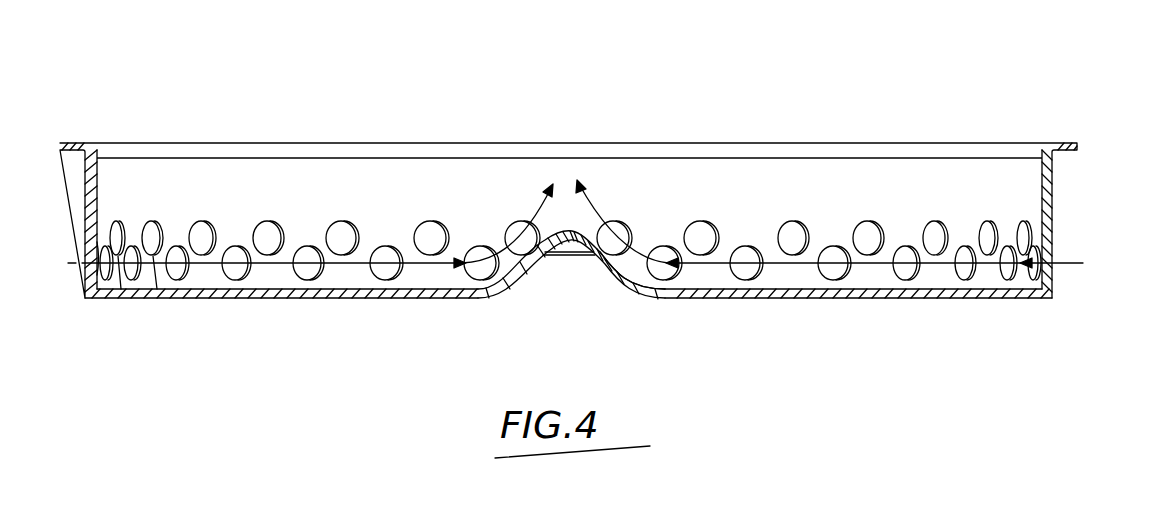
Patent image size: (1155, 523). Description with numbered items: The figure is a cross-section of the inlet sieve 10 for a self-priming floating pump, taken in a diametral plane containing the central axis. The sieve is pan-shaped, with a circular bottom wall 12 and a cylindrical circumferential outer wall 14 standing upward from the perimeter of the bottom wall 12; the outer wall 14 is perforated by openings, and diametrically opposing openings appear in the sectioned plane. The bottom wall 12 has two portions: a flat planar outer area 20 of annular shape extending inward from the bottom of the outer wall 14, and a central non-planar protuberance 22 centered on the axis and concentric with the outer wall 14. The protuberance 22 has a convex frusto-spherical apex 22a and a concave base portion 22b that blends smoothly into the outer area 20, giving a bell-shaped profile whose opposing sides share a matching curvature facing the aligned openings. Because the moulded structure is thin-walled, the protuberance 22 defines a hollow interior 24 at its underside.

The inlet sieve 10 is at (998, 85).
The bottom wall 12 is at (833, 311).
The circumferential outer wall 14 is at (1052, 187).
The flat planar outer area 20 is at (882, 293).
The protuberance 22 is at (531, 287).
The frusto-spherical apex 22a is at (597, 260).
The concave base portion 22b is at (629, 288).
The hollow interior 24 is at (562, 298).